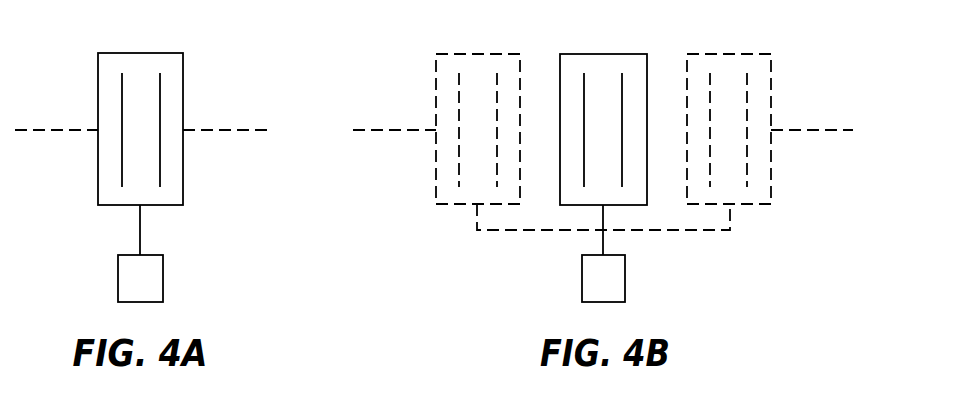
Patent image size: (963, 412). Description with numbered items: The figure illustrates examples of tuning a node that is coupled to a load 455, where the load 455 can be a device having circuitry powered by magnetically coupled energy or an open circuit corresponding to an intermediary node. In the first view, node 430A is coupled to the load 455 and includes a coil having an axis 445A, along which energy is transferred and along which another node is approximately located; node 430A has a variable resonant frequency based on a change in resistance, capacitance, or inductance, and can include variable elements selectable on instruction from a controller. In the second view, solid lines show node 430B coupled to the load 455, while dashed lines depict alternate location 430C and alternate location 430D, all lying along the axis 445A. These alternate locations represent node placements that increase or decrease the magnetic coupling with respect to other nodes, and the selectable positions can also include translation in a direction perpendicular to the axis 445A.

In FIG. 4A, the node 430A is at (140, 53).
In FIG. 4B, the node 430B is at (603, 54).
In FIG. 4B, the alternate location 430C is at (478, 54).
In FIG. 4B, the alternate location 430D is at (728, 54).
In FIG. 4A, the axis 445A is at (215, 130).
In FIG. 4B, the axis 445A is at (803, 130).
In FIG. 4A, the load 455 is at (163, 278).
In FIG. 4B, the load 455 is at (625, 276).